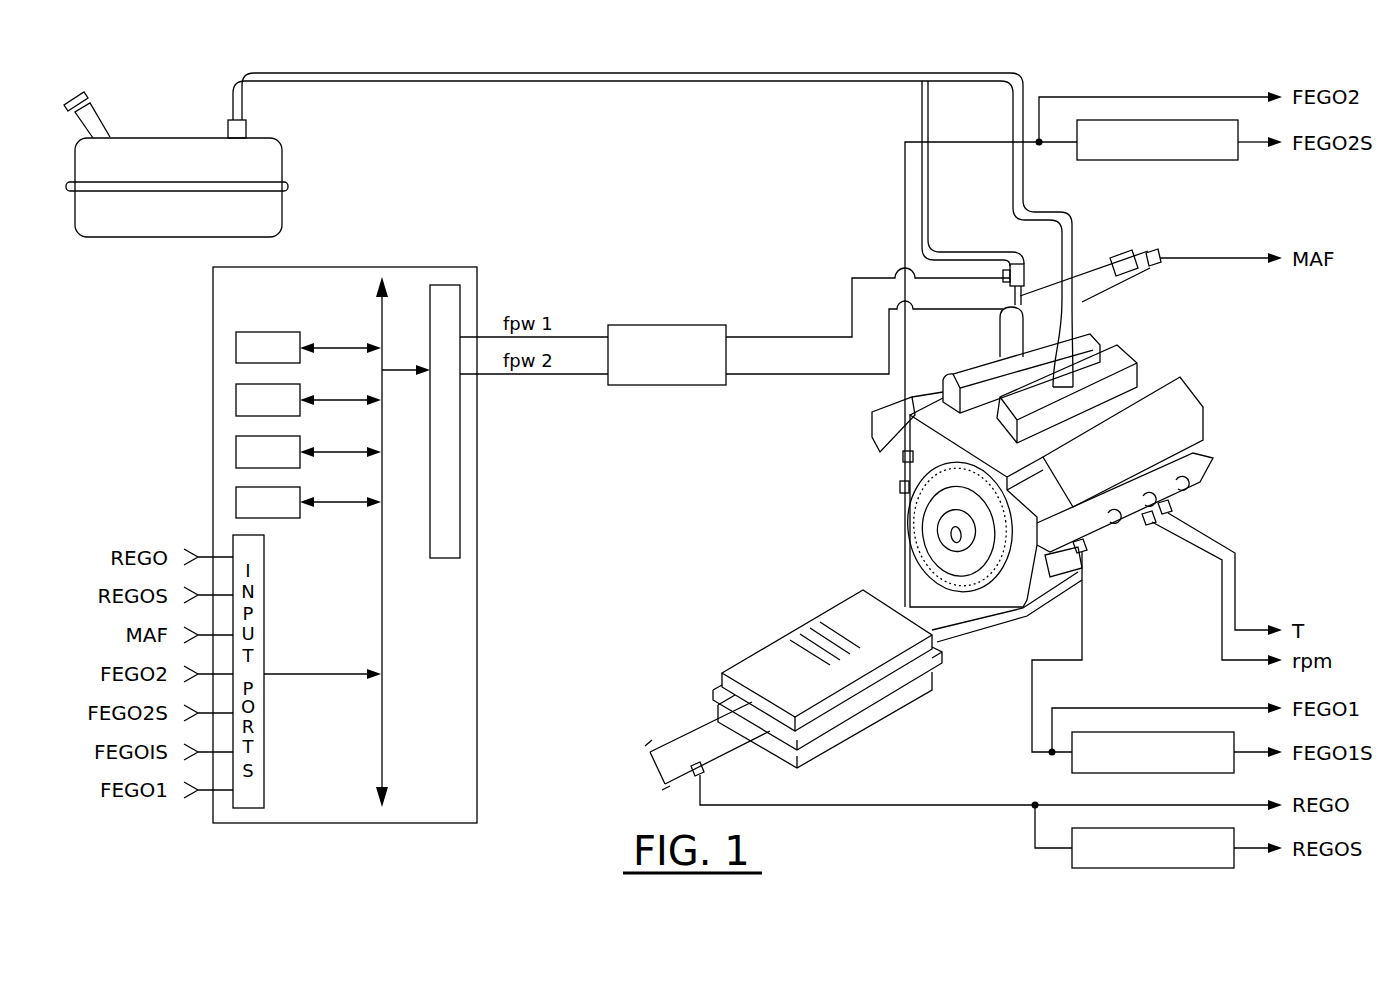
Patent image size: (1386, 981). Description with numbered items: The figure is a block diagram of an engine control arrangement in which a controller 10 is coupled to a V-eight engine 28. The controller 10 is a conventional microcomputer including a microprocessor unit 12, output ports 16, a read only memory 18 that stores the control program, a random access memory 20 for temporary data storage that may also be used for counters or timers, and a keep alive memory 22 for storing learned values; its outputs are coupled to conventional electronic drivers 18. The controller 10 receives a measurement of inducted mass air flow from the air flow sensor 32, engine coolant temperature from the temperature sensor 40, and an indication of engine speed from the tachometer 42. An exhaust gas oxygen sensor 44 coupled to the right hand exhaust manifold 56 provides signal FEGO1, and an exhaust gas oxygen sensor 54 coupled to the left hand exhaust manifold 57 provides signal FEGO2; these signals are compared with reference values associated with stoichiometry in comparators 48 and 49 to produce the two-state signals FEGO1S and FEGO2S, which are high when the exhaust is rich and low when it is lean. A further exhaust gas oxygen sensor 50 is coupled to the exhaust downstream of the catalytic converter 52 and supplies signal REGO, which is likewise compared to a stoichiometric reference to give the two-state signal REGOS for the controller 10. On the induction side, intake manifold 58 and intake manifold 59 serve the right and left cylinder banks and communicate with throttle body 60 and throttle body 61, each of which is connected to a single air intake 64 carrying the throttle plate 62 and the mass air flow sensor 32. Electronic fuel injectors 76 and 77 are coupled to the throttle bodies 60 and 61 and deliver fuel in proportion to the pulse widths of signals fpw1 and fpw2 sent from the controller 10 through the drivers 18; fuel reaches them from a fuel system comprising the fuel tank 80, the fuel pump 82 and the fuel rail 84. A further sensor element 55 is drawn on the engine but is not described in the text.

The controller 10 is at (204, 296).
The microprocessor unit 12 is at (236, 348).
The output ports 16 is at (452, 290).
The read only memory 18 is at (236, 399).
The random access memory 20 is at (236, 451).
The keep alive memory 22 is at (236, 501).
The engine 28 is at (1264, 408).
The air flow sensor 32 is at (1163, 254).
The temperature sensor 40 is at (1172, 508).
The tachometer 42 is at (1149, 527).
The exhaust gas oxygen sensor 44 is at (1085, 554).
The comparator 48 is at (1072, 772).
The comparator 49 is at (1143, 162).
The exhaust gas oxygen sensor 50 is at (777, 646).
The catalytic converter 52 is at (704, 769).
The exhaust gas oxygen sensor 54 is at (1072, 862).
The second exhaust gas oxygen sensor 55 is at (903, 460).
The right hand exhaust manifold 56 is at (1190, 468).
The left hand exhaust manifold 57 is at (900, 488).
The intake manifold 58 is at (1138, 377).
The intake manifold 59 is at (915, 392).
The throttle body 60 is at (1088, 347).
The throttle body 61 is at (998, 325).
The throttle plate 62 is at (1124, 252).
The air intake 64 is at (1147, 245).
The fuel injector 76 is at (1078, 292).
The fuel injector 77 is at (1014, 263).
The fuel tank 80 is at (176, 137).
The fuel pump 82 is at (248, 123).
The fuel rail 84 is at (633, 84).